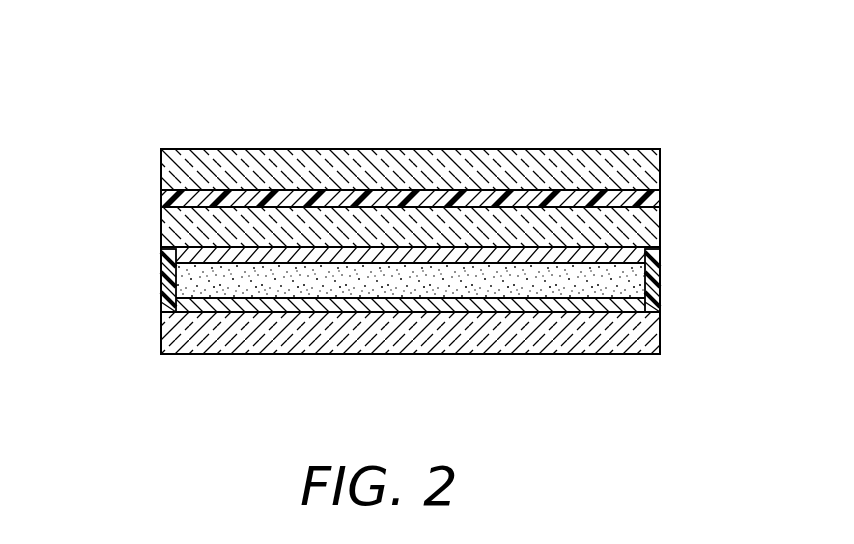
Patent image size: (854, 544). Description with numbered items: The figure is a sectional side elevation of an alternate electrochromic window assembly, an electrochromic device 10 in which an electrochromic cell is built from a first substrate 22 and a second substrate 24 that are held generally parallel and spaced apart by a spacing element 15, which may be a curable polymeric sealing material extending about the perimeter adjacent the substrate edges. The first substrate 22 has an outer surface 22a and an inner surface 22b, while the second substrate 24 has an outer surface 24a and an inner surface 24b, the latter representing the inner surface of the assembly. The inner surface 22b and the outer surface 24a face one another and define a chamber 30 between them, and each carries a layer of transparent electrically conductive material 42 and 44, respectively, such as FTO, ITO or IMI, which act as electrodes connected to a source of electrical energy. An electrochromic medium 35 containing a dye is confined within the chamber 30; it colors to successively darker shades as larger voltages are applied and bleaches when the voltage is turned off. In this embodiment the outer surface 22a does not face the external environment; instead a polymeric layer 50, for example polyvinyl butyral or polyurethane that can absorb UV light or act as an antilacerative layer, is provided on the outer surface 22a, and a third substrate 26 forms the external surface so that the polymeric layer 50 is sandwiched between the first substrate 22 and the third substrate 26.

The electrochromic device 10 is at (124, 109).
The third substrate 26 is at (540, 150).
The polymeric layer 50 is at (470, 200).
The first substrate 22 is at (172, 232).
The outer surface of first substrate 22a is at (288, 205).
The inner surface of first substrate 22b is at (385, 268).
The transparent electrically conductive material 42 is at (660, 250).
The chamber 30 is at (650, 278).
The transparent electrically conductive material 44 is at (572, 305).
The electrochromic medium 35 is at (660, 298).
The spacing element 15 is at (164, 280).
The second substrate 24 is at (170, 337).
The outer surface of second substrate 24a is at (283, 293).
The inner surface of second substrate 24b is at (424, 355).